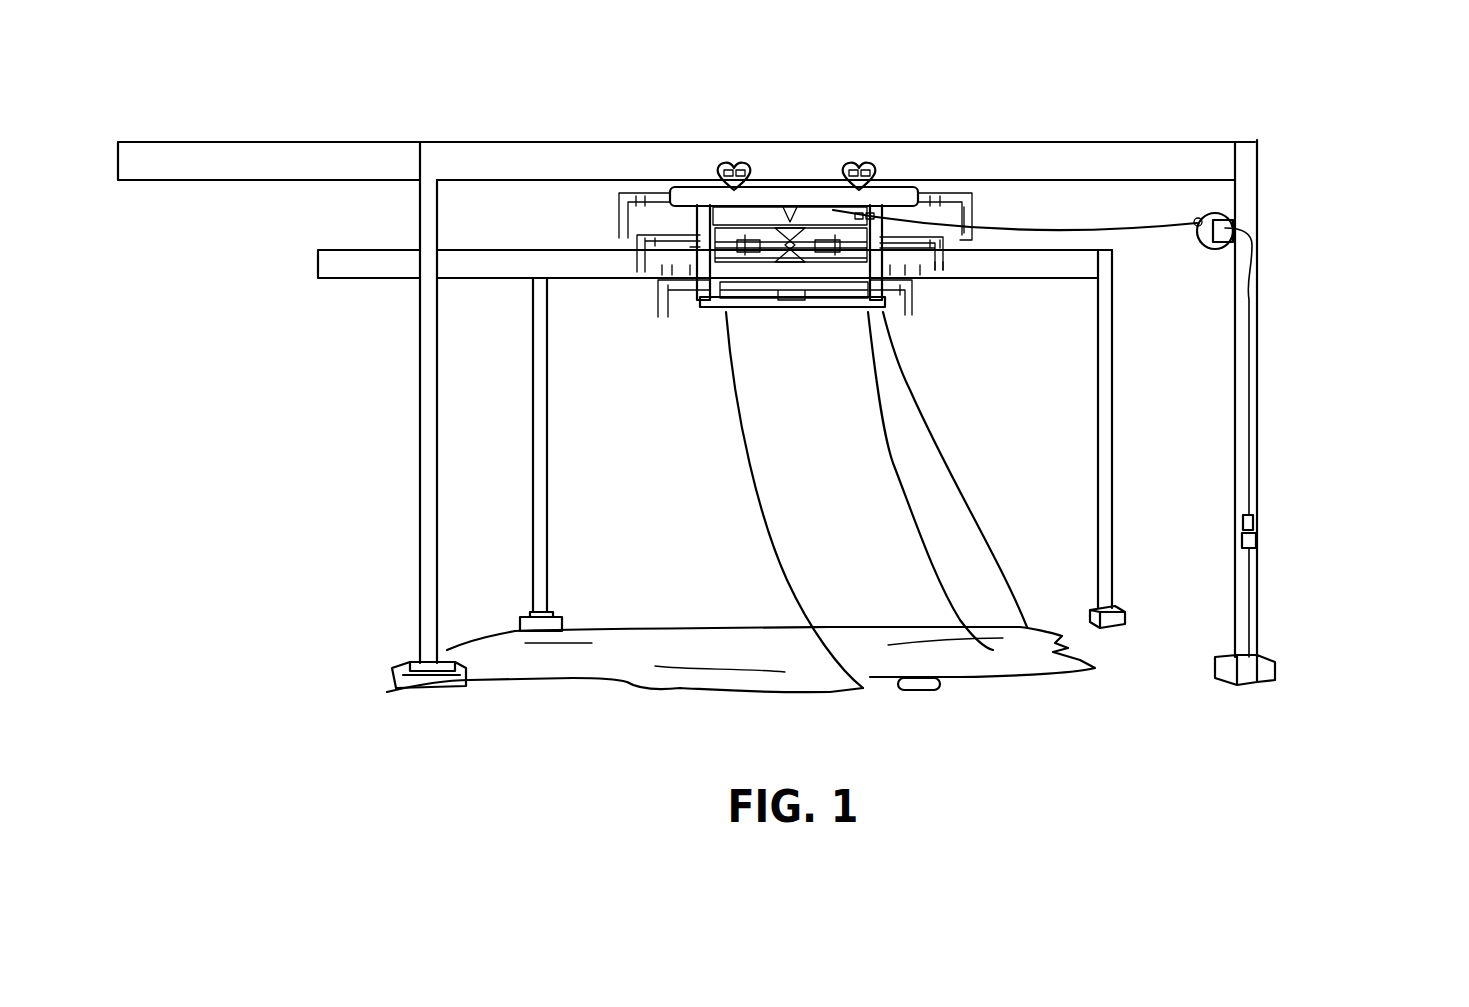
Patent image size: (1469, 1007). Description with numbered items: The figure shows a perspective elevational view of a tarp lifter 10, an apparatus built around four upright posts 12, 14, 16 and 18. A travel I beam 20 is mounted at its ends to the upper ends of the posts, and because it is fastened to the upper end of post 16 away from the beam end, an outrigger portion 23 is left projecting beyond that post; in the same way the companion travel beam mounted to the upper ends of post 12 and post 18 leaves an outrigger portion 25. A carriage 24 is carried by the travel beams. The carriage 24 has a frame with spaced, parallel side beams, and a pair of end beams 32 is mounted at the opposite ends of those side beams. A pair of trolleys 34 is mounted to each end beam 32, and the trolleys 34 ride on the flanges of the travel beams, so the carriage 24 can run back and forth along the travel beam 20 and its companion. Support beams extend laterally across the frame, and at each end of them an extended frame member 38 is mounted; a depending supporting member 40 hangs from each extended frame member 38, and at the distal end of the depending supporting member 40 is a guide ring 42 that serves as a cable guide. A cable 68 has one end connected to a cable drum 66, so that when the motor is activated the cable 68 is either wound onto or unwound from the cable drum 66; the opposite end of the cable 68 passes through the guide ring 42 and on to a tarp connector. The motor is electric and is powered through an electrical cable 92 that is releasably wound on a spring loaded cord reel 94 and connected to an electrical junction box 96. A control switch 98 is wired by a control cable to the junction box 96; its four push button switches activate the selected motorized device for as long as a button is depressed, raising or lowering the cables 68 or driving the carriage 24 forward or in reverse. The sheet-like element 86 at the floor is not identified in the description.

The tarp lifter 10 is at (1373, 320).
The upright post 12 is at (1243, 270).
The upright post 14 is at (1106, 313).
The upright post 16 is at (545, 583).
The upright post 18 is at (427, 615).
The travel I beam 20 is at (995, 157).
The outrigger portion 23 is at (320, 155).
The carriage 24 is at (696, 197).
The outrigger portion 25 is at (383, 265).
The end beam 32 is at (784, 195).
The trolley 34 is at (727, 163).
The extended frame member 38 is at (935, 190).
The depending supporting member 40 is at (972, 208).
The guide ring 42 is at (958, 203).
The cable drum 66 is at (953, 210).
The cable 68 is at (910, 390).
The floor sheet 86 is at (580, 667).
The electrical cable 92 is at (1097, 217).
The spring loaded cord reel 94 is at (1230, 226).
The electrical junction box 96 is at (1254, 525).
The control switch 98 is at (927, 688).